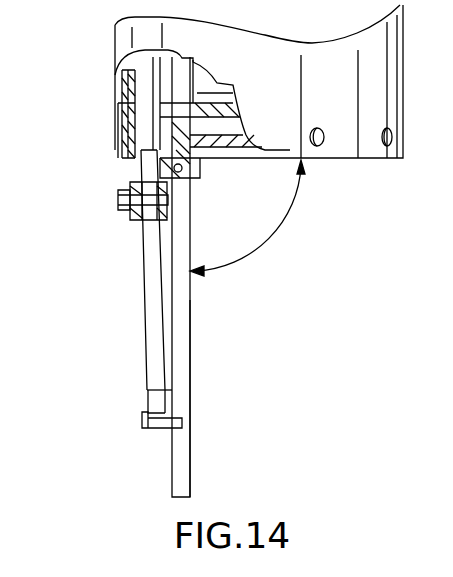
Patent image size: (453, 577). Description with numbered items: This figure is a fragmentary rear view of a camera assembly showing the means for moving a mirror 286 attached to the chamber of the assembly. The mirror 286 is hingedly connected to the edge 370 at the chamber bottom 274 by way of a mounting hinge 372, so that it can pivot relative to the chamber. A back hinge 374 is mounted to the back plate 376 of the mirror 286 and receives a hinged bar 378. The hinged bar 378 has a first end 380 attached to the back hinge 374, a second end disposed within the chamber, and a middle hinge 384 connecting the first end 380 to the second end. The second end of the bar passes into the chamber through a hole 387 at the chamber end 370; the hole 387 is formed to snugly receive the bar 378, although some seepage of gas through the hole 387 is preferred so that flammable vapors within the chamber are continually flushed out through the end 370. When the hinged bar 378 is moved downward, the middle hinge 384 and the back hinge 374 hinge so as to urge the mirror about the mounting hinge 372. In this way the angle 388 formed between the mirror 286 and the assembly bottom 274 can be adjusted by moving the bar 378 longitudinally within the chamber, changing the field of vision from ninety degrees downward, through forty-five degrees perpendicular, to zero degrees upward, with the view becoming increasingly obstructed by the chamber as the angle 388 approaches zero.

The chamber bottom 274 is at (120, 150).
The mirror 286 is at (192, 428).
The chamber end 370 is at (127, 162).
The mounting hinge 372 is at (182, 172).
The back hinge 374 is at (145, 430).
The back plate 376 is at (173, 478).
The hinged bar 378 is at (118, 80).
The first end 380 is at (142, 335).
The middle hinge 384 is at (128, 213).
The hole 387 is at (217, 90).
The angle 388 is at (284, 219).